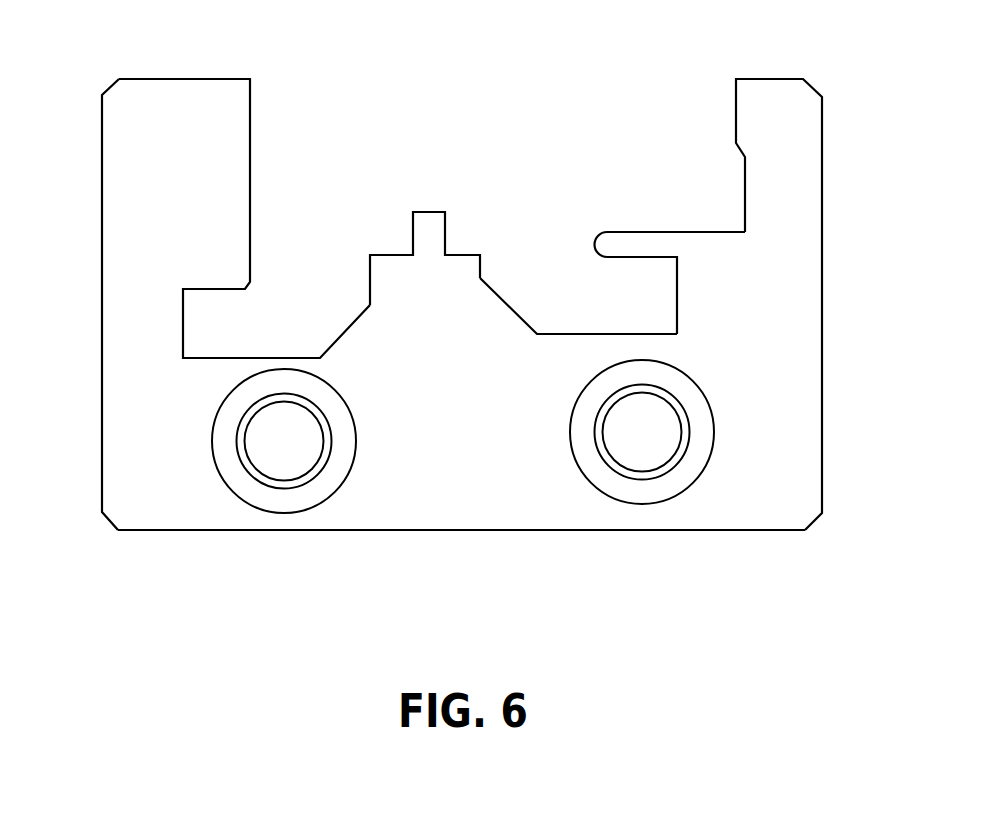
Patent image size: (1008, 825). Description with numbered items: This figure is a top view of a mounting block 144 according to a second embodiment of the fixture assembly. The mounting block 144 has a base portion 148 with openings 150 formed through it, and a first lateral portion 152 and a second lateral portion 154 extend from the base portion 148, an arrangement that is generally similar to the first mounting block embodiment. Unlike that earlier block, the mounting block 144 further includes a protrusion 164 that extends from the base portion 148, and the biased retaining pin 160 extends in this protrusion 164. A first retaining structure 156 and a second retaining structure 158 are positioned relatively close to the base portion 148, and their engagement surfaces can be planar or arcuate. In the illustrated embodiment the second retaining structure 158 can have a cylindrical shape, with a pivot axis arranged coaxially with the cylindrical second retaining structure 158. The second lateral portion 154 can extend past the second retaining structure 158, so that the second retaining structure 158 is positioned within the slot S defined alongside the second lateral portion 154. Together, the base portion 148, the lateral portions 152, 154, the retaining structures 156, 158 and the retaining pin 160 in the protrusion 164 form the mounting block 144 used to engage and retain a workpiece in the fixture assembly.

The mounting block 144 is at (462, 365).
The base portion 148 is at (475, 508).
The openings 150 is at (283, 500).
The first lateral portion 152 is at (117, 298).
The second lateral portion 154 is at (798, 232).
The first retaining structure 156 is at (238, 208).
The second retaining structure 158 is at (642, 228).
The biased retaining pin 160 is at (430, 212).
The protrusion 164 is at (487, 312).
The slot S is at (572, 258).